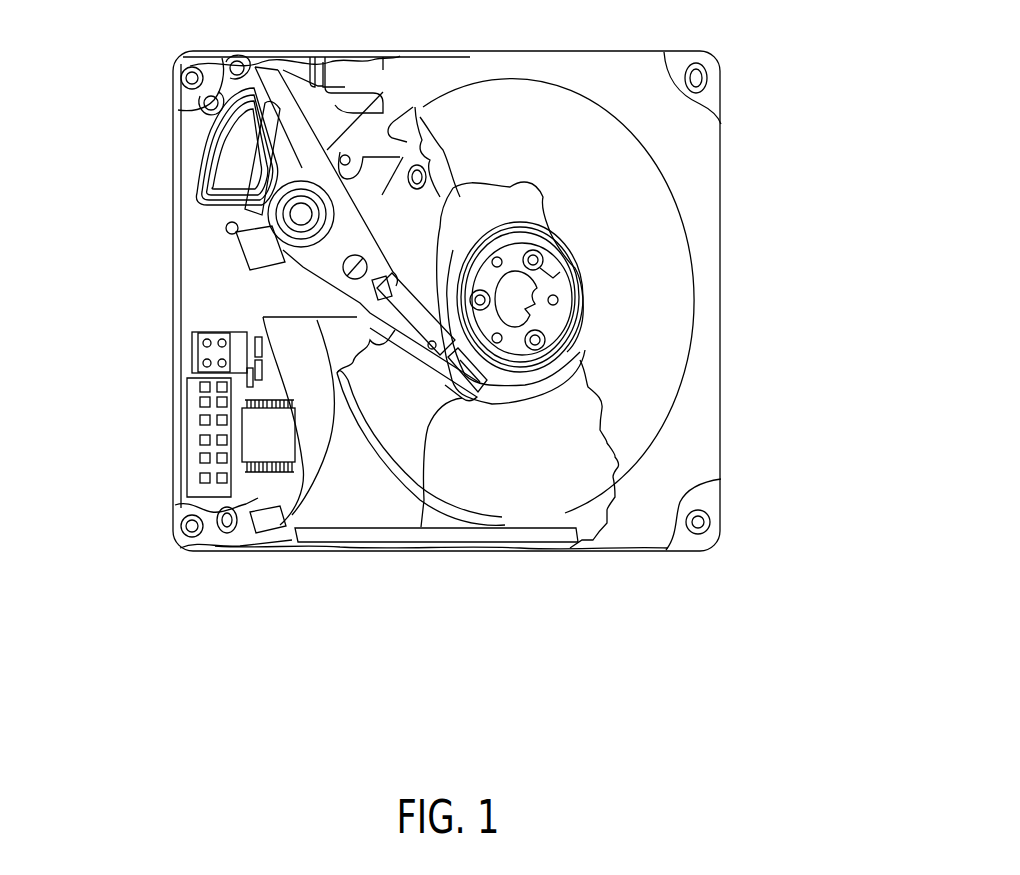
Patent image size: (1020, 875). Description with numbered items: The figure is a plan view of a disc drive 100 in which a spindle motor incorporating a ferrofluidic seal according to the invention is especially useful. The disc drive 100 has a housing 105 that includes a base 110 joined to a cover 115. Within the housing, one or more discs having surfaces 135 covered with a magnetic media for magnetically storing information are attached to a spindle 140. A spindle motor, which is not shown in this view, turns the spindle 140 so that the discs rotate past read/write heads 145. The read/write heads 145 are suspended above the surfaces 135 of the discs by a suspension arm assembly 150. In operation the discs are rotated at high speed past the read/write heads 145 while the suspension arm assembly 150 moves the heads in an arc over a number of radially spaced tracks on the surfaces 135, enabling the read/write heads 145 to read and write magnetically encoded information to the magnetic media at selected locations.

The disc drive 100 is at (738, 170).
The housing 105 is at (210, 552).
The base 110 is at (330, 513).
The cover 115 is at (443, 552).
The surfaces 135 is at (472, 474).
The spindle 140 is at (515, 352).
The read/write heads 145 is at (457, 494).
The suspension arm assembly 150 is at (196, 183).